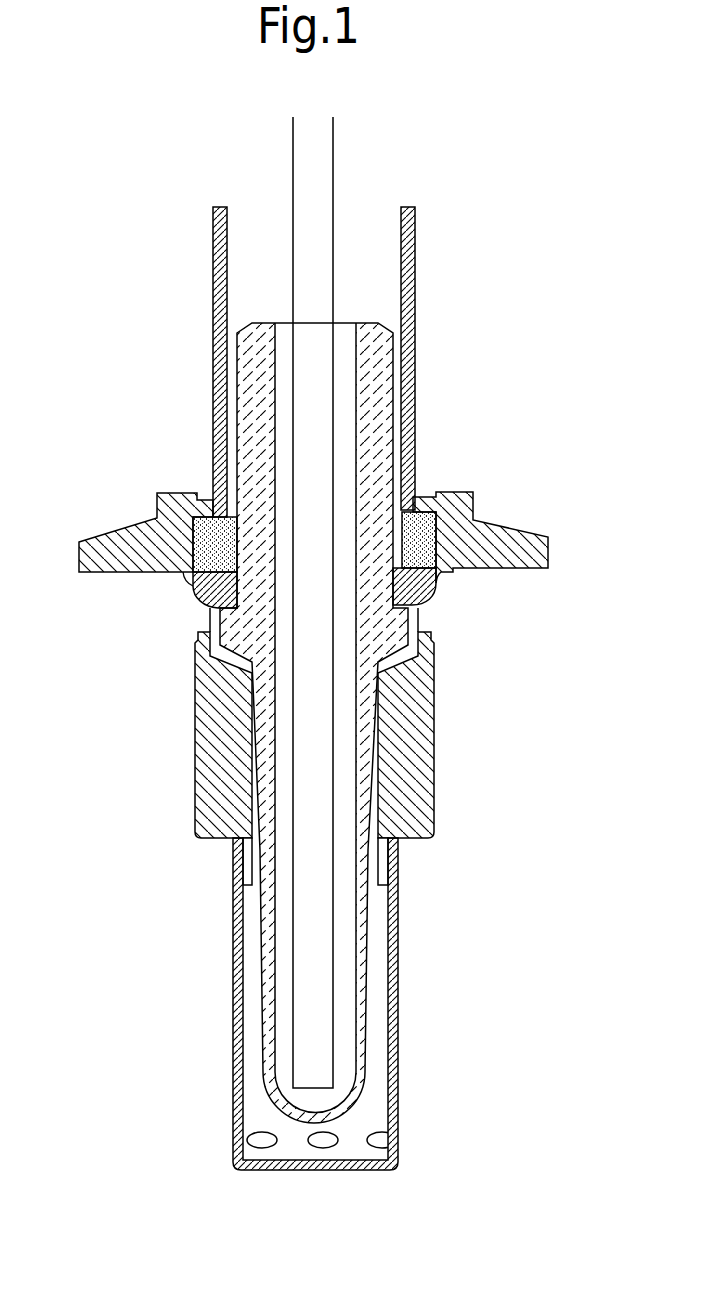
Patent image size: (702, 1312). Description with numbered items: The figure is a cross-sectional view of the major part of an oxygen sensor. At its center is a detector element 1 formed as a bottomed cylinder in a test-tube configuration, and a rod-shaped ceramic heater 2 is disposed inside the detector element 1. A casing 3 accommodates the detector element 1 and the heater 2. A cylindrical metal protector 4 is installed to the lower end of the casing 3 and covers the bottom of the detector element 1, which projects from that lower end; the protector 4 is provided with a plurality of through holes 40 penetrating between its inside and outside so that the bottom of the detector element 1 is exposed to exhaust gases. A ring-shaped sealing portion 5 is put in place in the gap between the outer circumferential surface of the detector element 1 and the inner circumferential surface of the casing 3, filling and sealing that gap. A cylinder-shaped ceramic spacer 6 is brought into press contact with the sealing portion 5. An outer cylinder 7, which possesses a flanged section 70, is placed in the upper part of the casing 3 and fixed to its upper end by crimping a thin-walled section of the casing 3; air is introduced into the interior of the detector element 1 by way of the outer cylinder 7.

The detector element 1 is at (368, 933).
The heater 2 is at (322, 150).
The casing 3 is at (515, 543).
The protector 4 is at (394, 1023).
The through holes 40 is at (325, 1137).
The sealing portion 5 is at (203, 596).
The spacer 6 is at (157, 518).
The outer cylinder 7 is at (413, 266).
The flanged section 70 is at (423, 492).